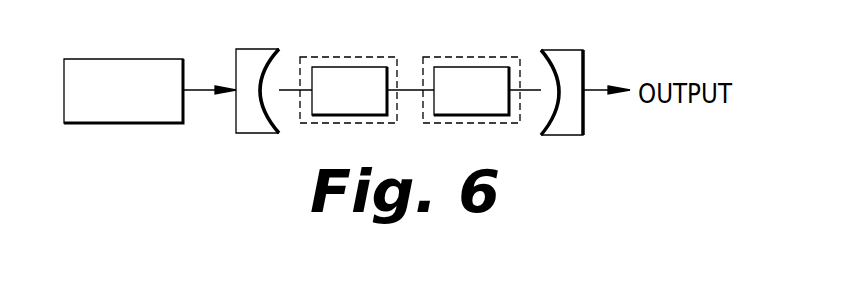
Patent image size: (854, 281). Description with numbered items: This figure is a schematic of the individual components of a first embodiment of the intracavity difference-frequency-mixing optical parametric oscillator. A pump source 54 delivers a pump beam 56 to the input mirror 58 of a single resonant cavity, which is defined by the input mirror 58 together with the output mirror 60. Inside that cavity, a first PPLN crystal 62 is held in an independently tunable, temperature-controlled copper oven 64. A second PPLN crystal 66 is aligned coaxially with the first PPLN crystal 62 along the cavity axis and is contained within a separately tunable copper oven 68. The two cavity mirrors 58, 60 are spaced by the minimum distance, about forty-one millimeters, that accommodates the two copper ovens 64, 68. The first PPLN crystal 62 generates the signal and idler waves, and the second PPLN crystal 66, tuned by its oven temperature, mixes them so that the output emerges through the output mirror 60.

The pump source 54 is at (124, 60).
The pump beam 56 is at (201, 88).
The input mirror 58 is at (252, 48).
The output mirror 60 is at (563, 49).
The first PPLN crystal 62 is at (372, 64).
The copper oven 64 is at (332, 62).
The second PPLN crystal 66 is at (495, 64).
The copper oven 68 is at (455, 62).